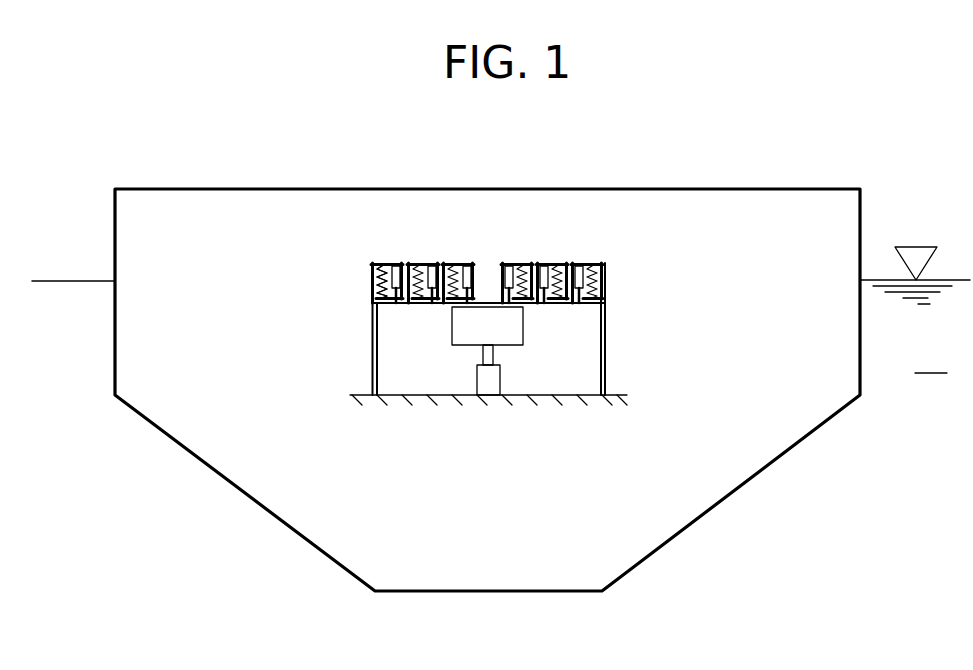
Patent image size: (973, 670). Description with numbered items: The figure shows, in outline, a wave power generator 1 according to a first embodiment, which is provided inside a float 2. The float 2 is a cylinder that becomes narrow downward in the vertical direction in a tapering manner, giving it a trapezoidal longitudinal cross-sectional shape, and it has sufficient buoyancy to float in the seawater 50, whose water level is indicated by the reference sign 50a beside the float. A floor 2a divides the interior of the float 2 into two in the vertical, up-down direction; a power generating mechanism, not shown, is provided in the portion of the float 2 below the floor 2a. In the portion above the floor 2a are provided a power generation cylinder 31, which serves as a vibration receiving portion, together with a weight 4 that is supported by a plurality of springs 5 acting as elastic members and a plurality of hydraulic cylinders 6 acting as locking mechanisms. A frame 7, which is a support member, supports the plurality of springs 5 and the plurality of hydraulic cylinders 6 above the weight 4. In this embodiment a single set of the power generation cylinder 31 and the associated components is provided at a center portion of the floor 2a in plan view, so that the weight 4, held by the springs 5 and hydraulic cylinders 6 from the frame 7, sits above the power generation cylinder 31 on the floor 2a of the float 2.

The wave power generator 1 is at (519, 294).
The float 2 is at (115, 232).
The floor 2a is at (602, 399).
The weight 4 is at (523, 322).
The spring 5 is at (378, 293).
The hydraulic cylinder 6 is at (508, 266).
The frame 7 is at (388, 263).
The power generation cylinder 31 is at (500, 372).
The seawater 50 is at (915, 327).
The water level 50a is at (916, 247).